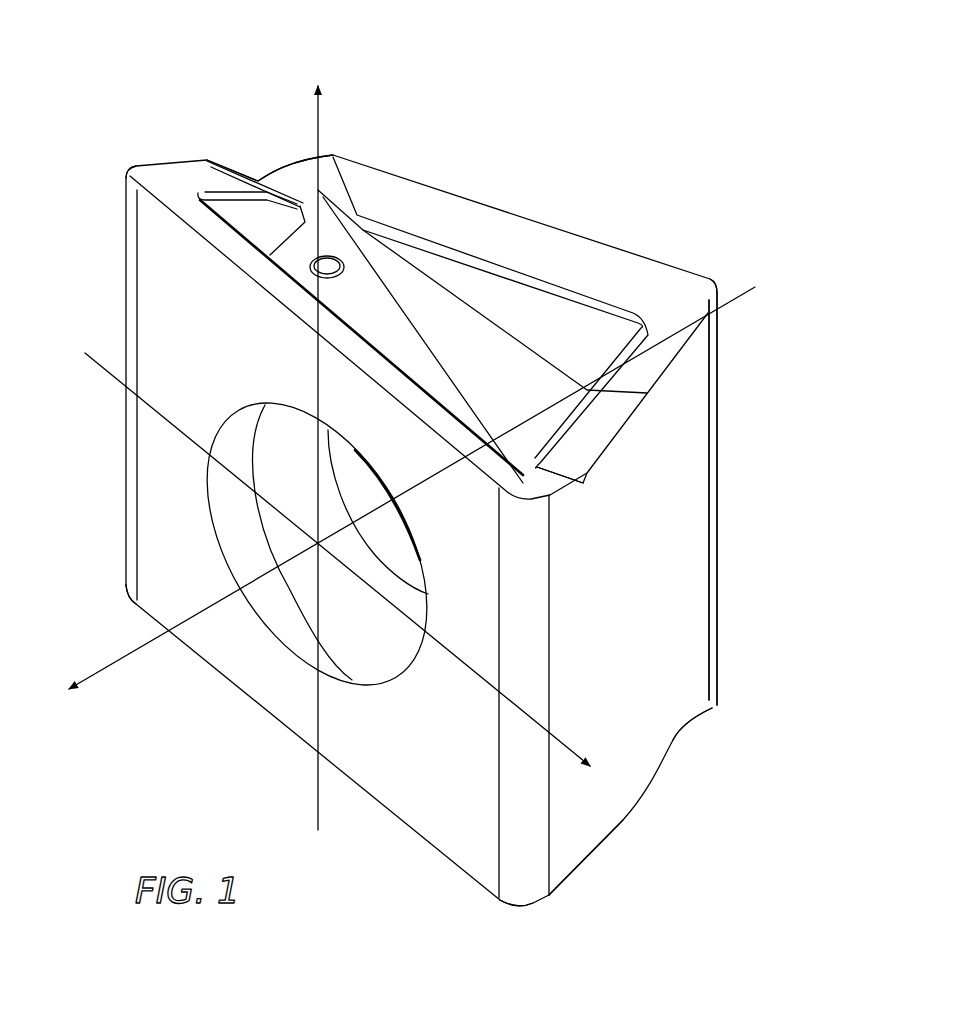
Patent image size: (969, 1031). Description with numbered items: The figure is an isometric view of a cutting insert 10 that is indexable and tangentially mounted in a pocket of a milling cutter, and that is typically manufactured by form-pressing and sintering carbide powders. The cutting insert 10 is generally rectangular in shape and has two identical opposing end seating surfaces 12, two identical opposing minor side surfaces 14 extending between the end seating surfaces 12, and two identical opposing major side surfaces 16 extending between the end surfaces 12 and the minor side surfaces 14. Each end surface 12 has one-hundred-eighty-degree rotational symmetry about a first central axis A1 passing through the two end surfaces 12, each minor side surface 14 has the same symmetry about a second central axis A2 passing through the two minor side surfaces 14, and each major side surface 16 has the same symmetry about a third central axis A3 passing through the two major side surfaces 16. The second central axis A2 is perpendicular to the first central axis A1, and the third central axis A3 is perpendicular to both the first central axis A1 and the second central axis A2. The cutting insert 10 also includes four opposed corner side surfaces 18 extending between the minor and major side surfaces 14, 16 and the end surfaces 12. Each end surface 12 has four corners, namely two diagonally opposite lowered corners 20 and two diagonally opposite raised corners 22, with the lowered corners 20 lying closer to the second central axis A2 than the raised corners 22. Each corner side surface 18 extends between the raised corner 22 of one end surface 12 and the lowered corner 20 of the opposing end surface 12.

The cutting insert 10 is at (641, 67).
The end seating surface 12 is at (394, 286).
The minor side surface 14 is at (670, 536).
The major side surface 16 is at (200, 518).
The corner side surface 18 is at (729, 442).
The lowered corner 20 is at (311, 151).
The raised corner 22 is at (126, 160).
The first central axis A1 is at (319, 443).
The second central axis A2 is at (353, 574).
The third central axis A3 is at (392, 501).